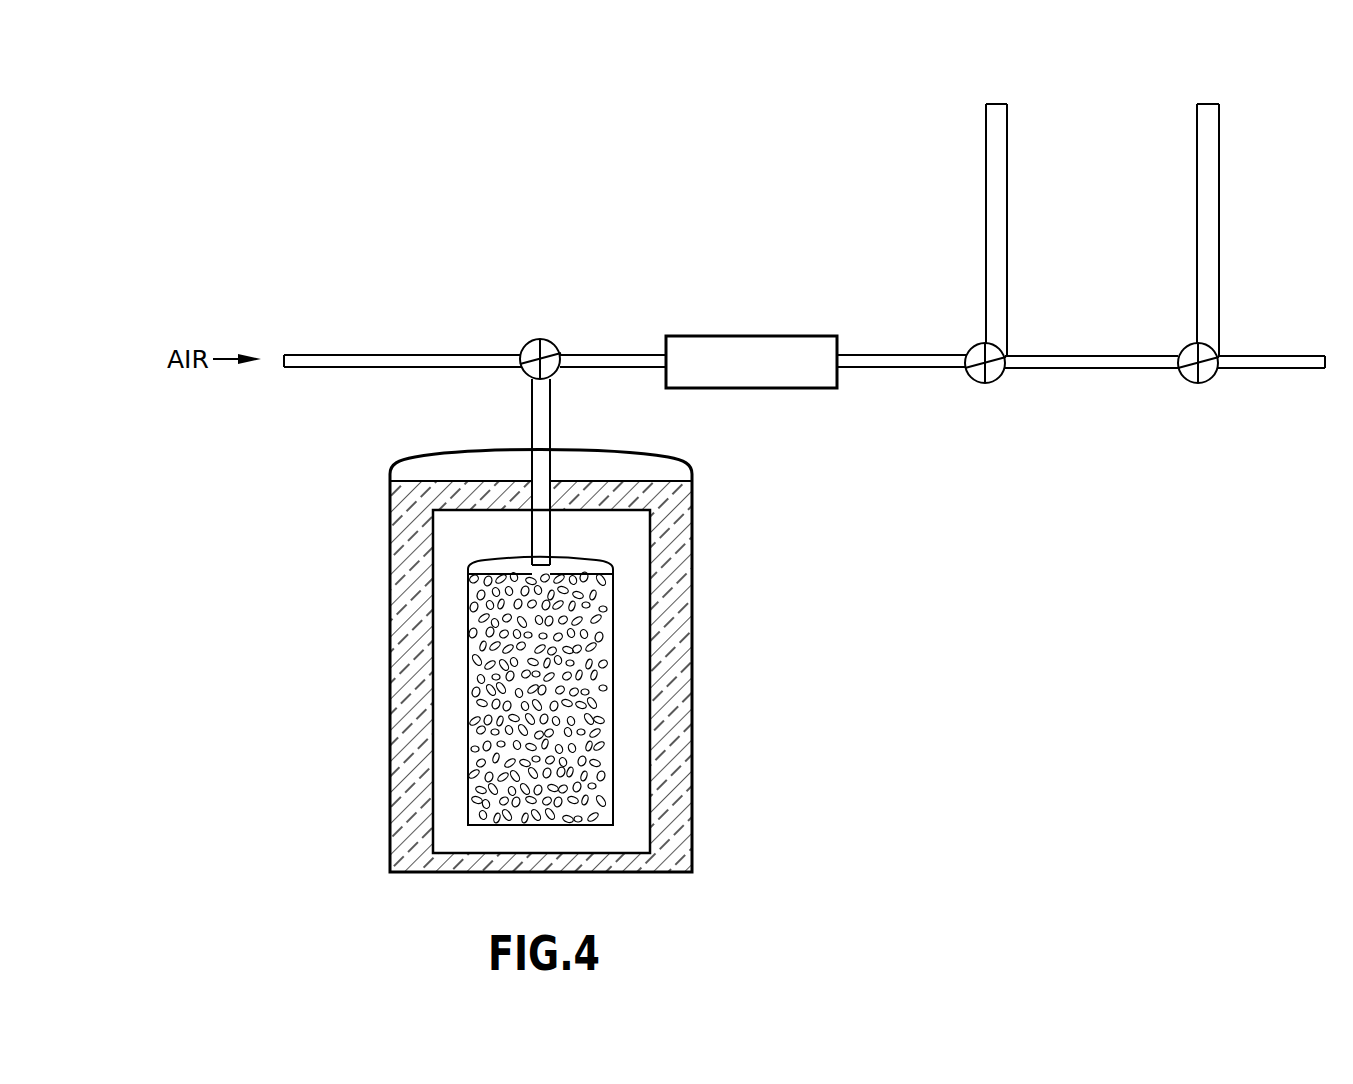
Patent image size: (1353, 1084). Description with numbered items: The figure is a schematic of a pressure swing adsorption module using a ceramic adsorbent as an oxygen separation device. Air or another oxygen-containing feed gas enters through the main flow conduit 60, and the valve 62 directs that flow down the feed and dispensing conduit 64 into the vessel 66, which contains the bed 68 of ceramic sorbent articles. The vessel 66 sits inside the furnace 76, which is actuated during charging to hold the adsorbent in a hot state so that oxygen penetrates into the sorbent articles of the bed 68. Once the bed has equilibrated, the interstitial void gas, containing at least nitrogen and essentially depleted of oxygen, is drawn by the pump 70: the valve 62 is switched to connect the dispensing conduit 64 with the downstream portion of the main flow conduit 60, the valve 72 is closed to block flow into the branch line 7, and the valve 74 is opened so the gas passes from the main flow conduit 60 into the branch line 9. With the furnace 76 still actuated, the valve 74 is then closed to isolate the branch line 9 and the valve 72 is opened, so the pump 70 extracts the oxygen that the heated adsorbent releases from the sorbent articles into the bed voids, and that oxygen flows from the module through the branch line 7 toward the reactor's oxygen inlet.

The main flow conduit 60 is at (340, 353).
The valve 62 is at (546, 340).
The feed and dispensing conduit 64 is at (531, 407).
The vessel 66 is at (390, 562).
The bed 68 is at (610, 646).
The pump 70 is at (756, 335).
The valve 72 is at (985, 383).
The valve 74 is at (1198, 383).
The branch line 7 is at (986, 289).
The branch line 9 is at (1221, 284).
The furnace 76 is at (692, 723).